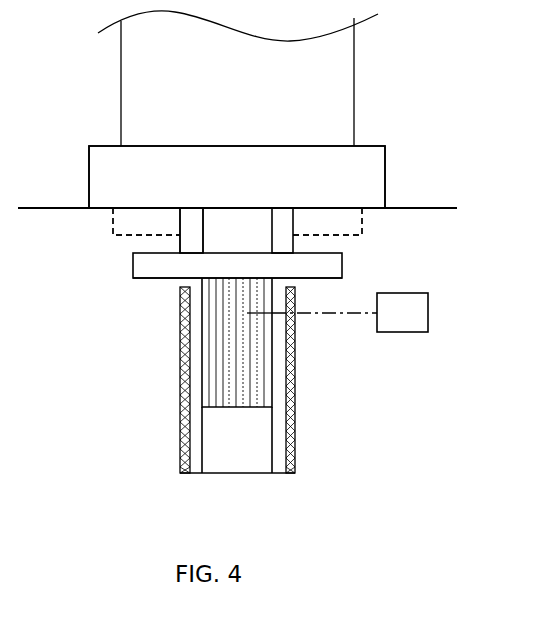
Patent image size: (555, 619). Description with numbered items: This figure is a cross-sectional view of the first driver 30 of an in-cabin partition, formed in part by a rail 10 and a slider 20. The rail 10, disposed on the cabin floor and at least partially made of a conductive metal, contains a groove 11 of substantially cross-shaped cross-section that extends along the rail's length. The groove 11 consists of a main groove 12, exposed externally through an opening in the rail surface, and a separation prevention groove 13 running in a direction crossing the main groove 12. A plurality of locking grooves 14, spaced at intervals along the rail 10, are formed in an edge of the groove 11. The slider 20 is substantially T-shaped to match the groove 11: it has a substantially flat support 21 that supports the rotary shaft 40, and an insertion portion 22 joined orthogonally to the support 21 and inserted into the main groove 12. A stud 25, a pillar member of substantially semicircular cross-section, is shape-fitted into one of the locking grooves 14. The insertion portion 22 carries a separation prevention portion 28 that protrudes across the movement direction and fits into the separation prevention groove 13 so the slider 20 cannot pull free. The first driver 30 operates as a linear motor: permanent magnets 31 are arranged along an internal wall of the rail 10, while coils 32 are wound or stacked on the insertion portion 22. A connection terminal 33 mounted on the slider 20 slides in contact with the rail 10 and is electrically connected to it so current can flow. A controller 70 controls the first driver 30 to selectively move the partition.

The rail 10 is at (165, 428).
The groove 11 is at (190, 208).
The main groove 12 is at (277, 227).
The separation prevention groove 13 is at (342, 265).
The locking grooves 14 is at (362, 220).
The slider 20 is at (80, 127).
The support 21 is at (387, 153).
The insertion portion 22 is at (233, 243).
The stud 25 is at (237, 221).
The separation prevention portion 28 is at (148, 279).
The first driver 30 is at (302, 404).
The permanent magnets 31 is at (290, 428).
The coils 32 is at (250, 355).
The connection terminal 33 is at (238, 440).
The rotary shaft 40 is at (340, 77).
The controller 70 is at (337, 312).